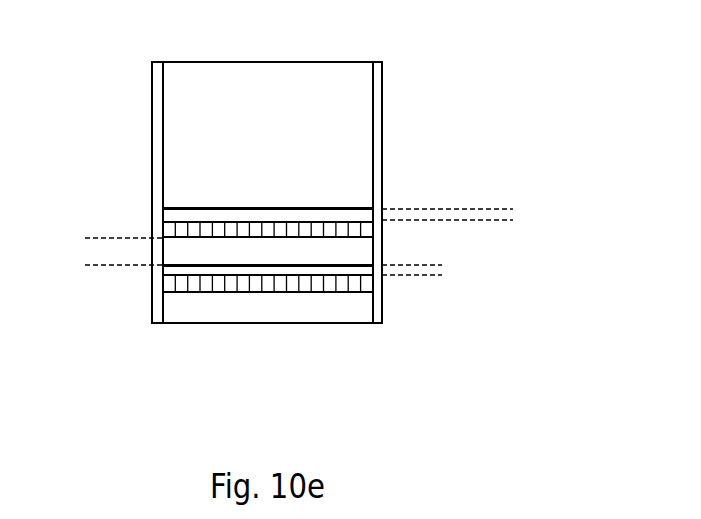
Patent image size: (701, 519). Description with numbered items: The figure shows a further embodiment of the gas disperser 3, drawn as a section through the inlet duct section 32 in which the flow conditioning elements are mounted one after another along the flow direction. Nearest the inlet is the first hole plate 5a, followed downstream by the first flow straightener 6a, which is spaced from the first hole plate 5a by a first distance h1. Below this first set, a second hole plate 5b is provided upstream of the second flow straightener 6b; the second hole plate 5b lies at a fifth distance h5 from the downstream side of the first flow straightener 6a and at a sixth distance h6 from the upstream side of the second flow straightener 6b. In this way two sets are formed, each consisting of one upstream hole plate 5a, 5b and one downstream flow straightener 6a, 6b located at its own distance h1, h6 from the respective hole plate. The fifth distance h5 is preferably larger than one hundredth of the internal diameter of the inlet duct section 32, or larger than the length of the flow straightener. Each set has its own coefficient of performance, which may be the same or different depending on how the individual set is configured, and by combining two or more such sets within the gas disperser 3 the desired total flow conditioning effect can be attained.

The gas disperser 3 is at (405, 70).
The inlet duct section 32 is at (157, 308).
The first hole plate 5a is at (373, 209).
The second hole plate 5b is at (163, 265).
The first flow straightener 6a is at (163, 228).
The second flow straightener 6b is at (322, 292).
The first distance h1 is at (508, 162).
The fifth distance h5 is at (88, 238).
The sixth distance h6 is at (439, 220).